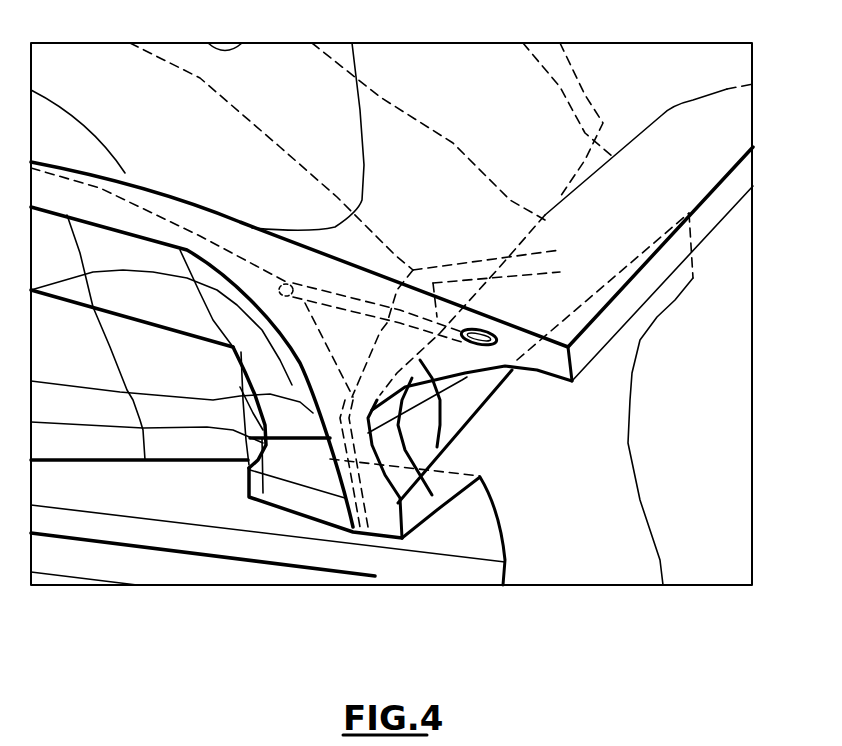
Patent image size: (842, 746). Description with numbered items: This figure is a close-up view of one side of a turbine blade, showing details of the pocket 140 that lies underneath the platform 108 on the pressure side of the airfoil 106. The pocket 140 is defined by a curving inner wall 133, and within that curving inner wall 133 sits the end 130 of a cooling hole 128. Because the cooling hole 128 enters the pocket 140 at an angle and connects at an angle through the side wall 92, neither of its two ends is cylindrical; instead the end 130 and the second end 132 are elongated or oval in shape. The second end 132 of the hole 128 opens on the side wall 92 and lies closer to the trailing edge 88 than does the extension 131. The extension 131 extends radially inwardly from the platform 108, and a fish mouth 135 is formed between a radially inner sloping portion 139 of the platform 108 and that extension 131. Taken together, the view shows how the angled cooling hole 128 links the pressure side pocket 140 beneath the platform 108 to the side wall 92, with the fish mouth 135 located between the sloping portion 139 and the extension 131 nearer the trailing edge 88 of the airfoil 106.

The airfoil 106 is at (283, 77).
The platform 108 is at (380, 127).
The trailing edge 88 is at (627, 282).
The curving inner wall 133 is at (233, 287).
The end of cooling hole 130 is at (285, 292).
The cooling hole 128 is at (332, 459).
The pocket 140 is at (247, 430).
The side wall 92 is at (437, 447).
The second end of hole 132 is at (482, 345).
The radially inner sloping portion 139 is at (468, 378).
The fish mouth 135 is at (432, 500).
The extension 131 is at (363, 480).